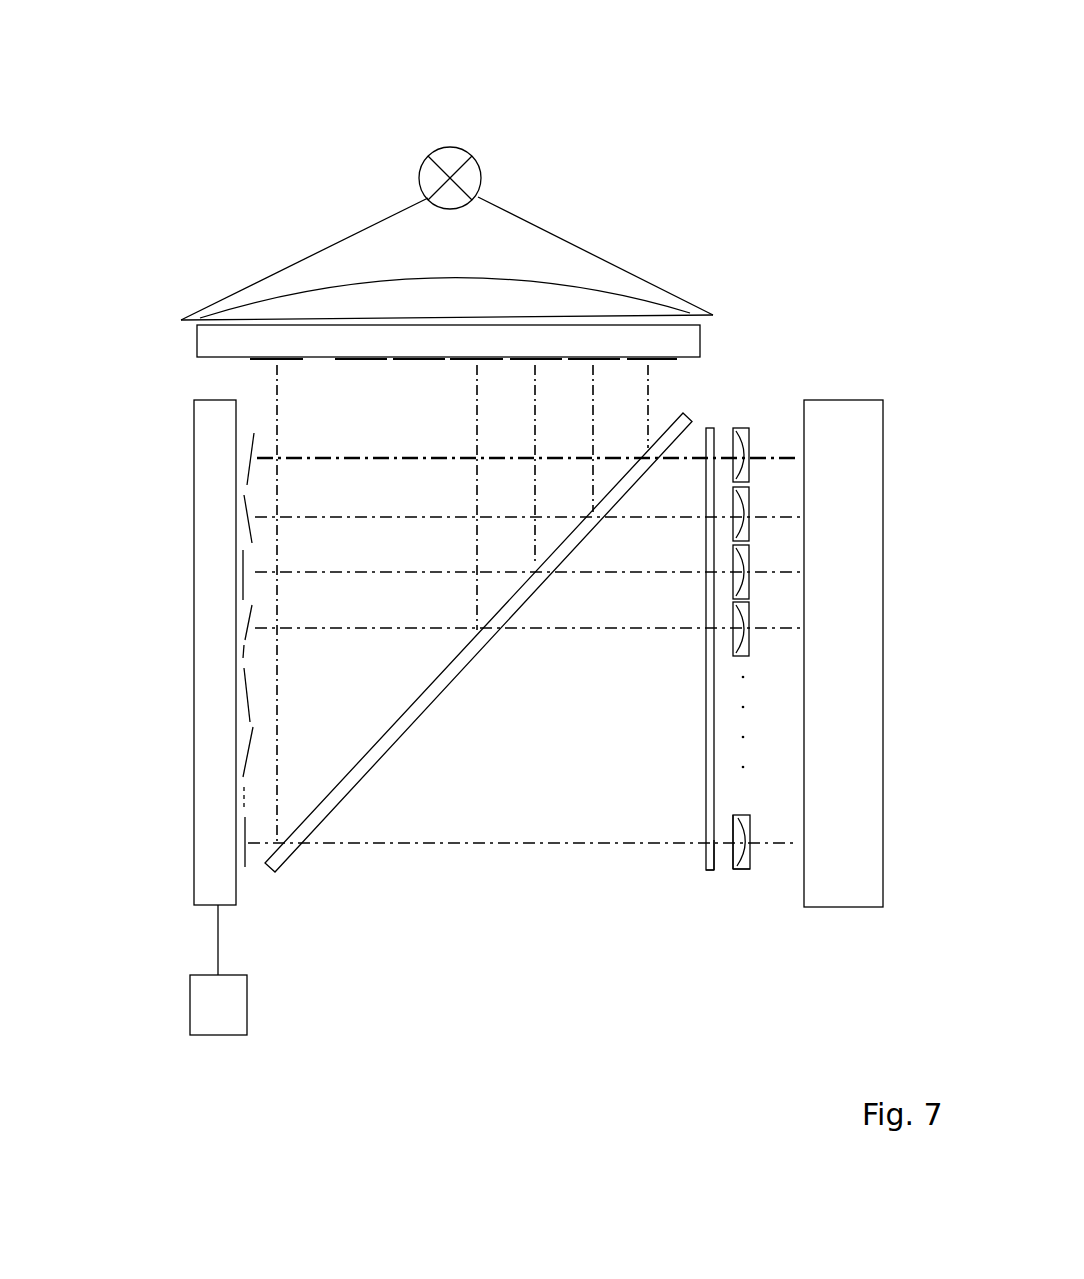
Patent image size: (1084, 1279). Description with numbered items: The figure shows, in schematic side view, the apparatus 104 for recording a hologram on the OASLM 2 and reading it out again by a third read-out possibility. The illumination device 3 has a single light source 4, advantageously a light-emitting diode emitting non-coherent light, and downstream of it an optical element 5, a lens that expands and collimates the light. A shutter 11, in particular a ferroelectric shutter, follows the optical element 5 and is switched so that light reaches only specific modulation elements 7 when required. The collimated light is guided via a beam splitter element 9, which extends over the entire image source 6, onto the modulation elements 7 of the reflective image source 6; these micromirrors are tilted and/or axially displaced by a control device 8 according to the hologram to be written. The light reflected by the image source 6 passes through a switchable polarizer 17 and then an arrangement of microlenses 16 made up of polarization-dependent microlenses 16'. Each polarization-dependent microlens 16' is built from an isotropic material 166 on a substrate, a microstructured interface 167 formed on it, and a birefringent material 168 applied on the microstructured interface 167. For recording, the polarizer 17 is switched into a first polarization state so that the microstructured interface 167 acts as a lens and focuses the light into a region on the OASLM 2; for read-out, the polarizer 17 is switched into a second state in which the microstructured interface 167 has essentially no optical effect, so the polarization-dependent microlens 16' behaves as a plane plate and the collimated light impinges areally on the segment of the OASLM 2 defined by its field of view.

The apparatus 104 is at (619, 86).
The illumination device 3 is at (205, 211).
The light source 4 is at (430, 179).
The optical element 5 is at (297, 307).
The shutter 11 is at (225, 342).
The modulation elements 7 is at (252, 452).
The image source 6 is at (215, 822).
The control device 8 is at (218, 1005).
The beam splitter element 9 is at (688, 422).
The switchable polarizer 17 is at (712, 782).
The polarization-dependent microlens 16' is at (776, 532).
The arrangement of microlenses 16 is at (744, 914).
The isotropic material 166 is at (750, 857).
The microstructured interface 167 is at (742, 868).
The birefringent material 168 is at (732, 853).
The OASLM 2 is at (865, 427).